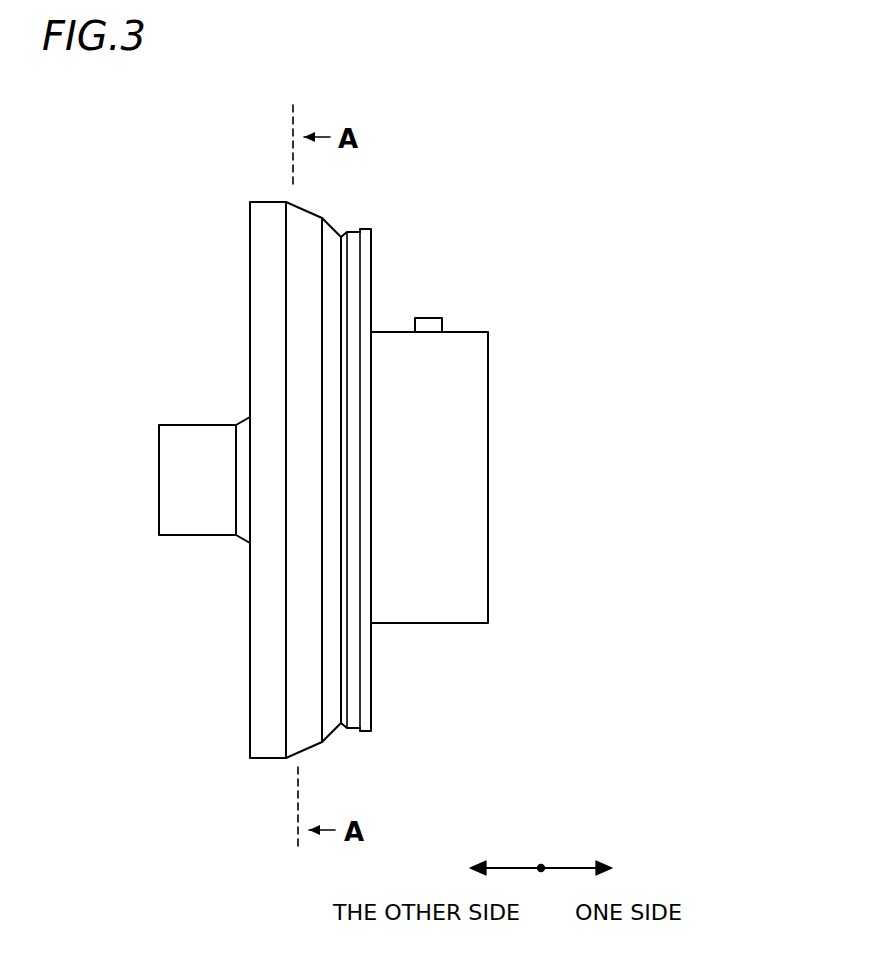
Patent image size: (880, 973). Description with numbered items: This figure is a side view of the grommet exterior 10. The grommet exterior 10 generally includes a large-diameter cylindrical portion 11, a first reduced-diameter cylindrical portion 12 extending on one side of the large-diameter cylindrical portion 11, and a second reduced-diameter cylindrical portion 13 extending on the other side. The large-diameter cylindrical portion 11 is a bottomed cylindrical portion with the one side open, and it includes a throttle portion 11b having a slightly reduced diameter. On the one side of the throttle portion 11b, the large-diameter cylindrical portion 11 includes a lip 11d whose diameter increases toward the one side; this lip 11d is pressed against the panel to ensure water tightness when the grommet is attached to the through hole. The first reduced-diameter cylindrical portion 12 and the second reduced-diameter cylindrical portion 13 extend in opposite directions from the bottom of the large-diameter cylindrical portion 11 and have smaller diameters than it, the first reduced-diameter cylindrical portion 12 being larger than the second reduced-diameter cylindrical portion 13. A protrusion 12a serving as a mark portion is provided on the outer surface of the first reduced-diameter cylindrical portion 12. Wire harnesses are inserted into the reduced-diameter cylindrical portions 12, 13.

The grommet exterior 10 is at (532, 186).
The large-diameter cylindrical portion 11 is at (263, 230).
The throttle portion 11b is at (342, 236).
The lip 11d is at (368, 708).
The first reduced-diameter cylindrical portion 12 is at (466, 345).
The protrusion 12a is at (425, 318).
The second reduced-diameter cylindrical portion 13 is at (189, 523).